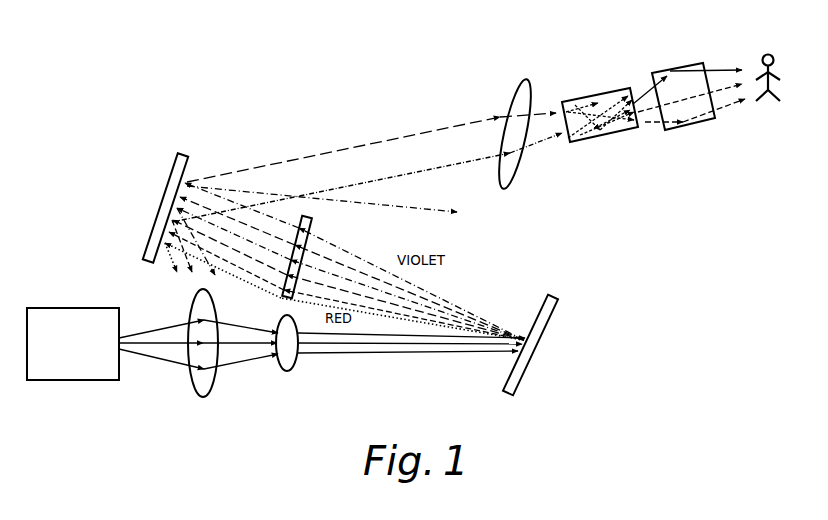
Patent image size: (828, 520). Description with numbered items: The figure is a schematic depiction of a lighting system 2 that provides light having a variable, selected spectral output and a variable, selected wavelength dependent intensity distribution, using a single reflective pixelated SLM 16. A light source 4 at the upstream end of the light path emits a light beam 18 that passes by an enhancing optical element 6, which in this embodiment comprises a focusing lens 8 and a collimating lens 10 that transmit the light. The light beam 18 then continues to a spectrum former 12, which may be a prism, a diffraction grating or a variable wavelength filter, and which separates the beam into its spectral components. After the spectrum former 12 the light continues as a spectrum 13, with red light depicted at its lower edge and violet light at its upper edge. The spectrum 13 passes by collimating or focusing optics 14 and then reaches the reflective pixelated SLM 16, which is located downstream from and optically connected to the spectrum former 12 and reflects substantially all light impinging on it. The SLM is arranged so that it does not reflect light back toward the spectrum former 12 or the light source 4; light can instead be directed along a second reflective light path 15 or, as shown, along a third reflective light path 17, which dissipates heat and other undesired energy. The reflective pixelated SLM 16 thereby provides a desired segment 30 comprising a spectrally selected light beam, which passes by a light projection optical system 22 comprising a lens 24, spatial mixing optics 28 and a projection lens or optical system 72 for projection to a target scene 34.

The lighting system 2 is at (285, 380).
The light source 4 is at (62, 308).
The enhancing optical element 6 is at (237, 376).
The focusing lens 8 is at (196, 392).
The collimating lens 10 is at (290, 370).
The spectrum former 12 is at (556, 320).
The spectrum 13 is at (446, 302).
The collimating or focusing optics 14 is at (320, 220).
The second reflective light path 15 is at (165, 258).
The reflective pixelated SLM 16 is at (182, 153).
The third reflective light path 17 is at (427, 203).
The light beam 18 is at (236, 322).
The light projection optical system 22 is at (533, 82).
The lens 24 is at (502, 92).
The spatial mixing optics 28 is at (605, 132).
The desired segment 30 is at (306, 163).
The target scene 34 is at (768, 106).
The projection lens or optical system 72 is at (693, 130).